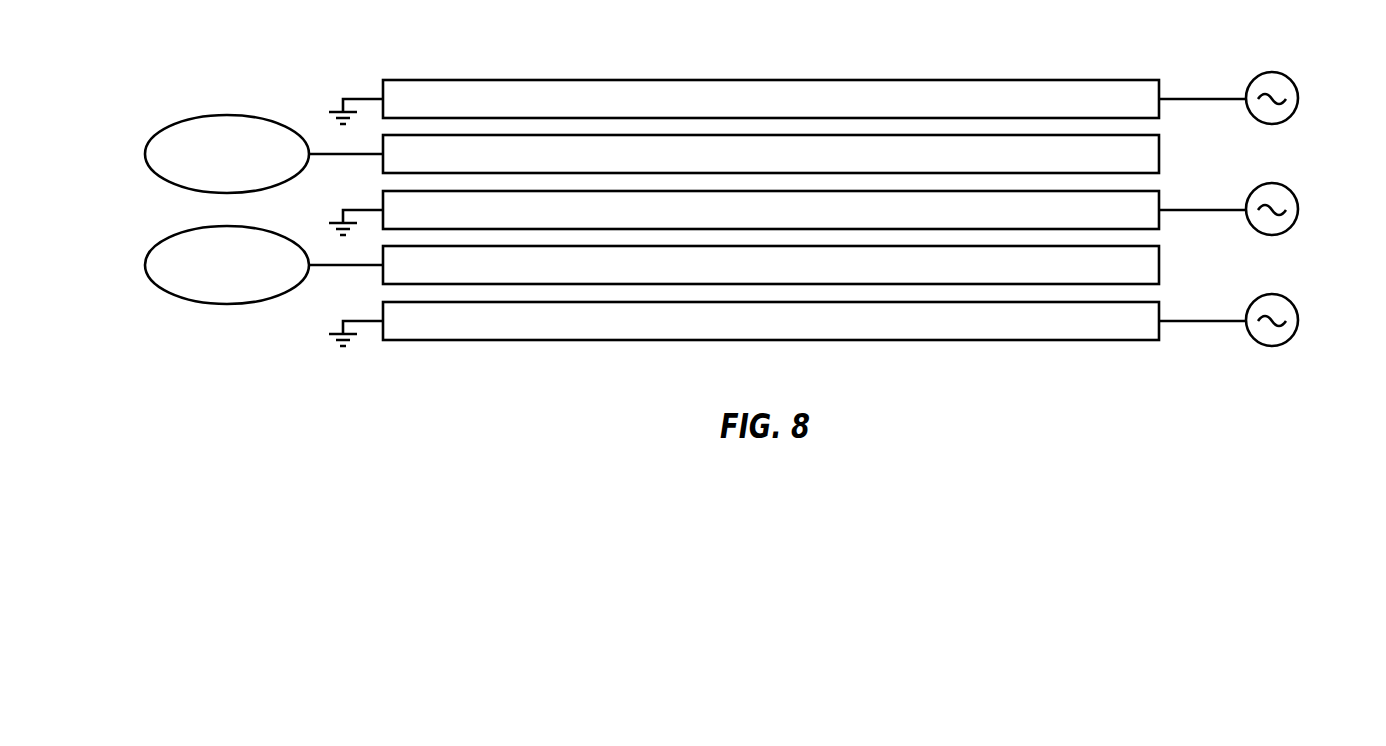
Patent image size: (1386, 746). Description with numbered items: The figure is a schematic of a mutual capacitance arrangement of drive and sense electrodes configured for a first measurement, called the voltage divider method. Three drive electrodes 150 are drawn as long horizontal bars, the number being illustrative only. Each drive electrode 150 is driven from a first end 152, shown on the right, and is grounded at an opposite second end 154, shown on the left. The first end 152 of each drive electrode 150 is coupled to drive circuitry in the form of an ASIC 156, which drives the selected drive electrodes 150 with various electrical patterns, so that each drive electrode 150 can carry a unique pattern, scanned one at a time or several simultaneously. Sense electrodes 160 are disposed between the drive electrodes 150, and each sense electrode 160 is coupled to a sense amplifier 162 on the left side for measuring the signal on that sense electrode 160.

The drive electrode 150 is at (1092, 88).
The first end 152 is at (1162, 81).
The second end 154 is at (382, 105).
The ASIC 156 is at (1293, 79).
The sense electrode 160 is at (1143, 148).
The sense amplifier 162 is at (153, 176).